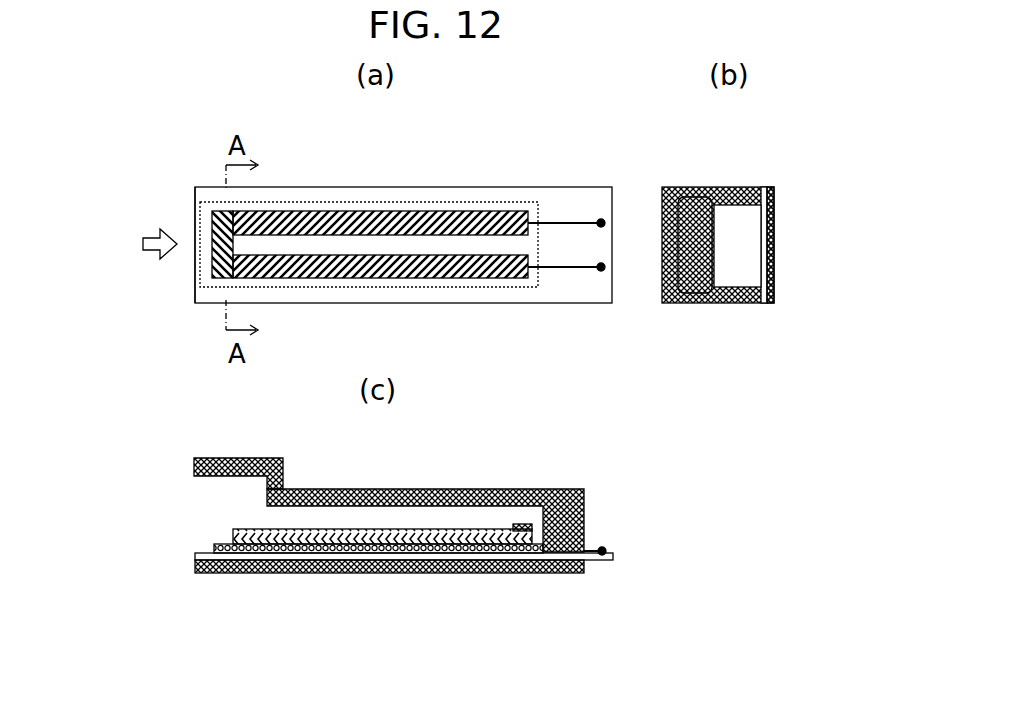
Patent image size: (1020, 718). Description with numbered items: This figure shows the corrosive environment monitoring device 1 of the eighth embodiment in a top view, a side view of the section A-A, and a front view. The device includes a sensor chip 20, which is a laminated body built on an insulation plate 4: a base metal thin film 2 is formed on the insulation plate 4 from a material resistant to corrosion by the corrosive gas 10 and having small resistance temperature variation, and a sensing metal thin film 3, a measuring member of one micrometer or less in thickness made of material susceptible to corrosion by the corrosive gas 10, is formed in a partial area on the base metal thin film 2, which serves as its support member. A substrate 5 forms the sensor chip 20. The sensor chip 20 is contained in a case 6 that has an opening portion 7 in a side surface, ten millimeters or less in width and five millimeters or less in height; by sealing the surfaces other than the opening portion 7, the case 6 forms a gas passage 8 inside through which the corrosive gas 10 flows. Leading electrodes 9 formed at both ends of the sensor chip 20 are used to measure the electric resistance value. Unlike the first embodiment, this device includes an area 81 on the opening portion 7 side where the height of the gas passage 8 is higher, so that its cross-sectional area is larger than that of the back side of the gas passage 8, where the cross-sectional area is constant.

The corrosive environment monitoring device 1 is at (575, 182).
The base metal thin film 2 is at (756, 216).
The sensing metal thin film 3 is at (352, 222).
The insulation plate 4 is at (772, 202).
The substrate 5 is at (503, 290).
The case 6 is at (663, 278).
The opening portion 7 is at (195, 220).
The gas passage 8 is at (533, 207).
The leading electrodes 9 is at (570, 272).
The corrosive gas 10 is at (145, 235).
The sensor chip 20 is at (175, 528).
The area where the height of the gas passage is high 81 is at (242, 472).